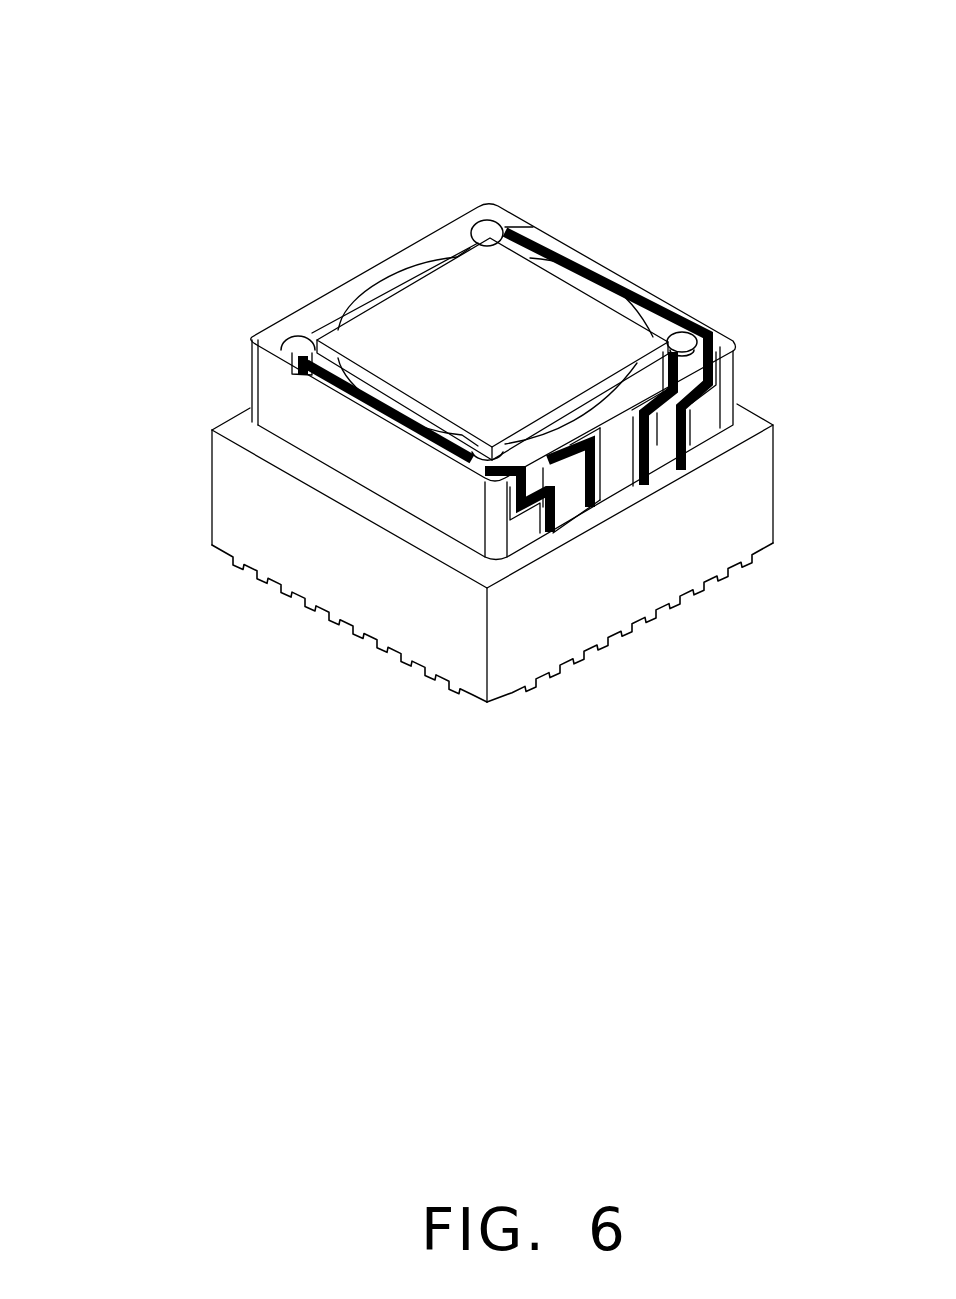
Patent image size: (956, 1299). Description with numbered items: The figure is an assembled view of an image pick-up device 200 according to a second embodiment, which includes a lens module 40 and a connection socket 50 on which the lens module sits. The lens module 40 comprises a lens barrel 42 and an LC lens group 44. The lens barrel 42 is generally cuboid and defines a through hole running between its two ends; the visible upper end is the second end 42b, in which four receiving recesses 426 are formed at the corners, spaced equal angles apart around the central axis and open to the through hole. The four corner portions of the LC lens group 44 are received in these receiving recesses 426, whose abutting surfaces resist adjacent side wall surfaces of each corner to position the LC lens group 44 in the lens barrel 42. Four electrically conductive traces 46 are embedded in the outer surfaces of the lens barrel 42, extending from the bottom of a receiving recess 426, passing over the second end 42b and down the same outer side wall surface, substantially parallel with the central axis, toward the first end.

The image pick-up device 200 is at (408, 88).
The lens module 40 is at (353, 127).
The lens barrel 42 is at (432, 244).
The second end 42b is at (292, 322).
The receiving recess 426 is at (490, 232).
The LC lens group 44 is at (418, 315).
The electrically conductive trace 46 is at (647, 296).
The connection socket 50 is at (228, 476).